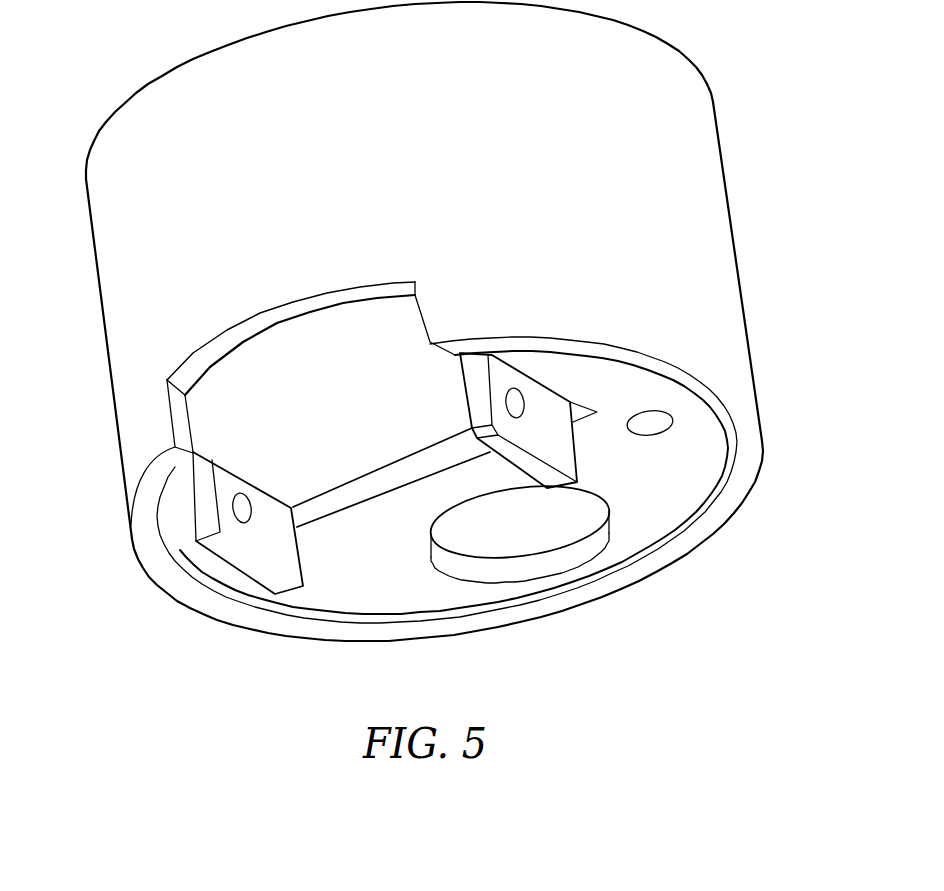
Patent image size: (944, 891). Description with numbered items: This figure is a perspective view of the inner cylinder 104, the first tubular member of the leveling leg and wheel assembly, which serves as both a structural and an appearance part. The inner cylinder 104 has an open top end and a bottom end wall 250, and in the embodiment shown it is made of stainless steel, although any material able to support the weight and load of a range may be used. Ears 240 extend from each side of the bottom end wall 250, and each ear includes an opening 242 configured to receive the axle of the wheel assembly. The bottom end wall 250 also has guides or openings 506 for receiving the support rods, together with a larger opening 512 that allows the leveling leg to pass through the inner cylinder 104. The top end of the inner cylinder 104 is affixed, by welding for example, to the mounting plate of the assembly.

The inner cylinder 104 is at (657, 180).
The ears 240 is at (202, 481).
The openings 242 is at (240, 510).
The bottom end wall 250 is at (372, 563).
The guides or openings 506 is at (650, 422).
The opening 512 is at (530, 520).